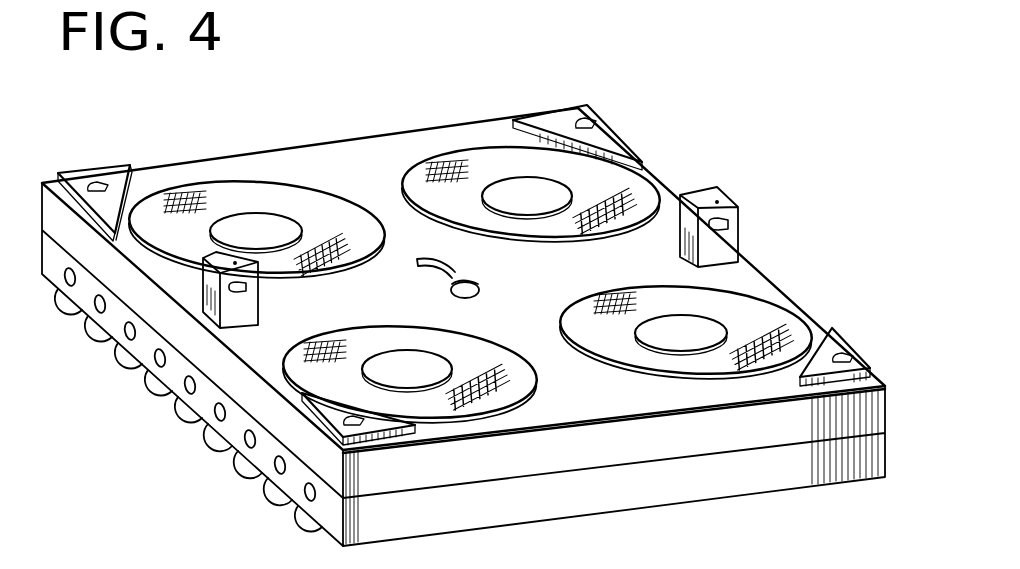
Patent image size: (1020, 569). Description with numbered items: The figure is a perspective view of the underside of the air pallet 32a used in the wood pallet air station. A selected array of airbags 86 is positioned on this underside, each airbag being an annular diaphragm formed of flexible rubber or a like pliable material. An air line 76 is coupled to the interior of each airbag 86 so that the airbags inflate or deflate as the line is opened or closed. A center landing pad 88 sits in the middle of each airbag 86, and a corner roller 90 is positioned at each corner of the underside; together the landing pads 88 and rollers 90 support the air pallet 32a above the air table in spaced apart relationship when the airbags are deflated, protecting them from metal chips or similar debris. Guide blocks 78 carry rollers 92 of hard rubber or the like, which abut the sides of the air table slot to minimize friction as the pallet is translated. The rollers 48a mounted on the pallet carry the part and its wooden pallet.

The air pallet 32a is at (684, 485).
The scalloped bearing rollers 48a is at (186, 432).
The air line 76 is at (447, 258).
The guide block 78 is at (710, 188).
The airbag 86 is at (207, 187).
The center landing pad 88 is at (262, 230).
The corner roller 90 is at (96, 184).
The roller 92 is at (730, 235).